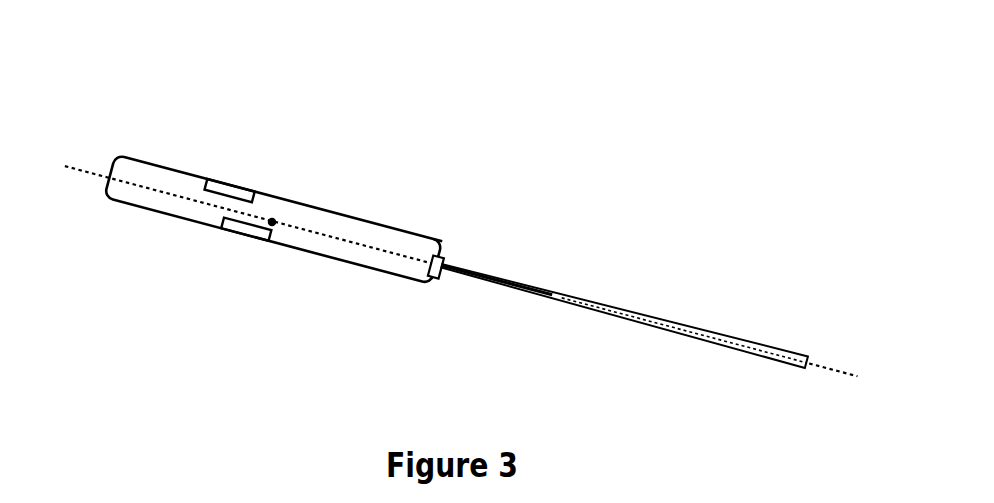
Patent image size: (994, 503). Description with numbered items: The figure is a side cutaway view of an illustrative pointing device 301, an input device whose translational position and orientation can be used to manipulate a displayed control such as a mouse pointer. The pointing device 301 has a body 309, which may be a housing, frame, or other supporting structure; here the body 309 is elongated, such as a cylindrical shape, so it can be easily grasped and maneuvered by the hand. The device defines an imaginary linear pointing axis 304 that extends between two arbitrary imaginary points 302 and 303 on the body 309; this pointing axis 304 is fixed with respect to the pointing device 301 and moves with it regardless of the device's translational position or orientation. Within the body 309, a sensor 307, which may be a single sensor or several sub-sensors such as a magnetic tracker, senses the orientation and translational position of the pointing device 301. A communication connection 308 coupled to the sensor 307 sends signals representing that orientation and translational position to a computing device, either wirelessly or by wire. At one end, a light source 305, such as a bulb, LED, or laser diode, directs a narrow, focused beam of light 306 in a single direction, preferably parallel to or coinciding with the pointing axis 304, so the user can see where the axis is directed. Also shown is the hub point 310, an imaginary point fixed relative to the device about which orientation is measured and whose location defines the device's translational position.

The pointing device 301 is at (348, 94).
The imaginary point 302 is at (109, 177).
The imaginary point 303 is at (432, 257).
The pointing axis 304 is at (350, 244).
The light source 305 is at (438, 279).
The beam of light 306 is at (775, 363).
The sensor 307 is at (232, 189).
The communication connection 308 is at (245, 236).
The body 309 is at (312, 250).
The hub point 310 is at (274, 221).